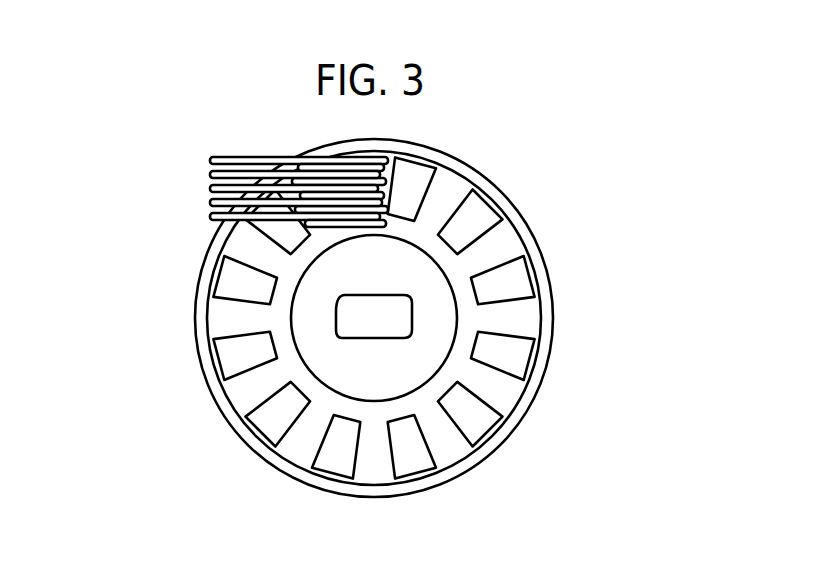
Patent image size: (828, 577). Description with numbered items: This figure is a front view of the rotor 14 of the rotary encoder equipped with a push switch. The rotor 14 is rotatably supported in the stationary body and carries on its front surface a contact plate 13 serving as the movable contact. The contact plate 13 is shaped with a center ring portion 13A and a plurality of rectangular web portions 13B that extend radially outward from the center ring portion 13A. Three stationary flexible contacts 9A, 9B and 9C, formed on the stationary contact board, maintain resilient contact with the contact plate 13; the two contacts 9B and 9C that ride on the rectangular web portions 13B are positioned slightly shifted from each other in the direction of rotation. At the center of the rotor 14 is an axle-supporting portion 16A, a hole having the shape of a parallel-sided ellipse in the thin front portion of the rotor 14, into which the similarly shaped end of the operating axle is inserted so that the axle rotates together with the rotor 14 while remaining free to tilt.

The flexible contact 9A is at (215, 215).
The flexible contact 9B is at (215, 190).
The flexible contact 9C is at (213, 163).
The contact plate 13 is at (445, 315).
The center ring portion 13A is at (443, 242).
The rectangular web portions 13B is at (497, 233).
The rotor 14 is at (543, 378).
The axle-supporting portion 16A is at (352, 322).